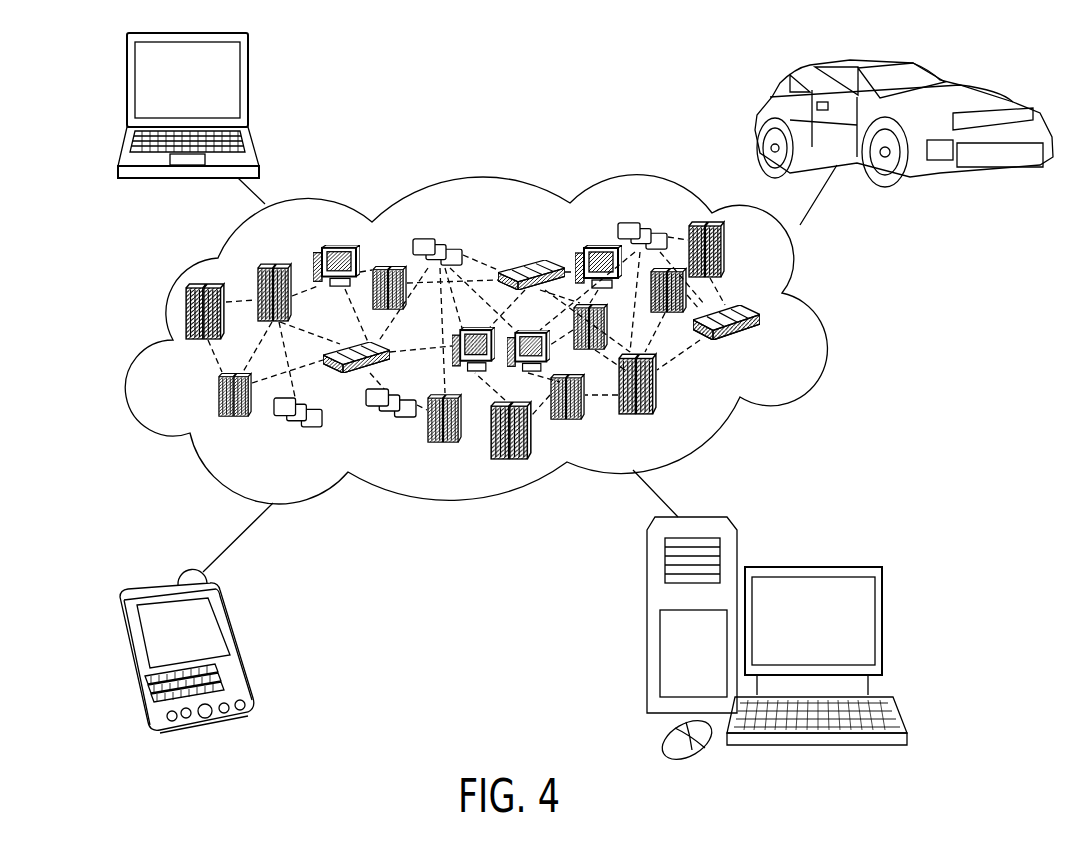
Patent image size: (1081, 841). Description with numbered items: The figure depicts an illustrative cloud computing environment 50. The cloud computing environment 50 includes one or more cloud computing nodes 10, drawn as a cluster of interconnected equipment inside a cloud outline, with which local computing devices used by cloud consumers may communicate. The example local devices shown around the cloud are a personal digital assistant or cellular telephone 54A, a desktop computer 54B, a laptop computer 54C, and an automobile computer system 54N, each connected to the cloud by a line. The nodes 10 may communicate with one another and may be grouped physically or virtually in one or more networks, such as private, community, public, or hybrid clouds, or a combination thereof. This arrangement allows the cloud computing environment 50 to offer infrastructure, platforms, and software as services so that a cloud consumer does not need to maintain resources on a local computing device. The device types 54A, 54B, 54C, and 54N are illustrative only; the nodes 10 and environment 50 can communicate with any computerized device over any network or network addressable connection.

The cloud computing environment 50 is at (828, 332).
The cloud computing nodes 10 is at (773, 345).
The personal digital assistant or cellular telephone 54A is at (235, 643).
The desktop computer 54B is at (843, 565).
The laptop computer 54C is at (248, 100).
The automobile computer system 54N is at (958, 82).